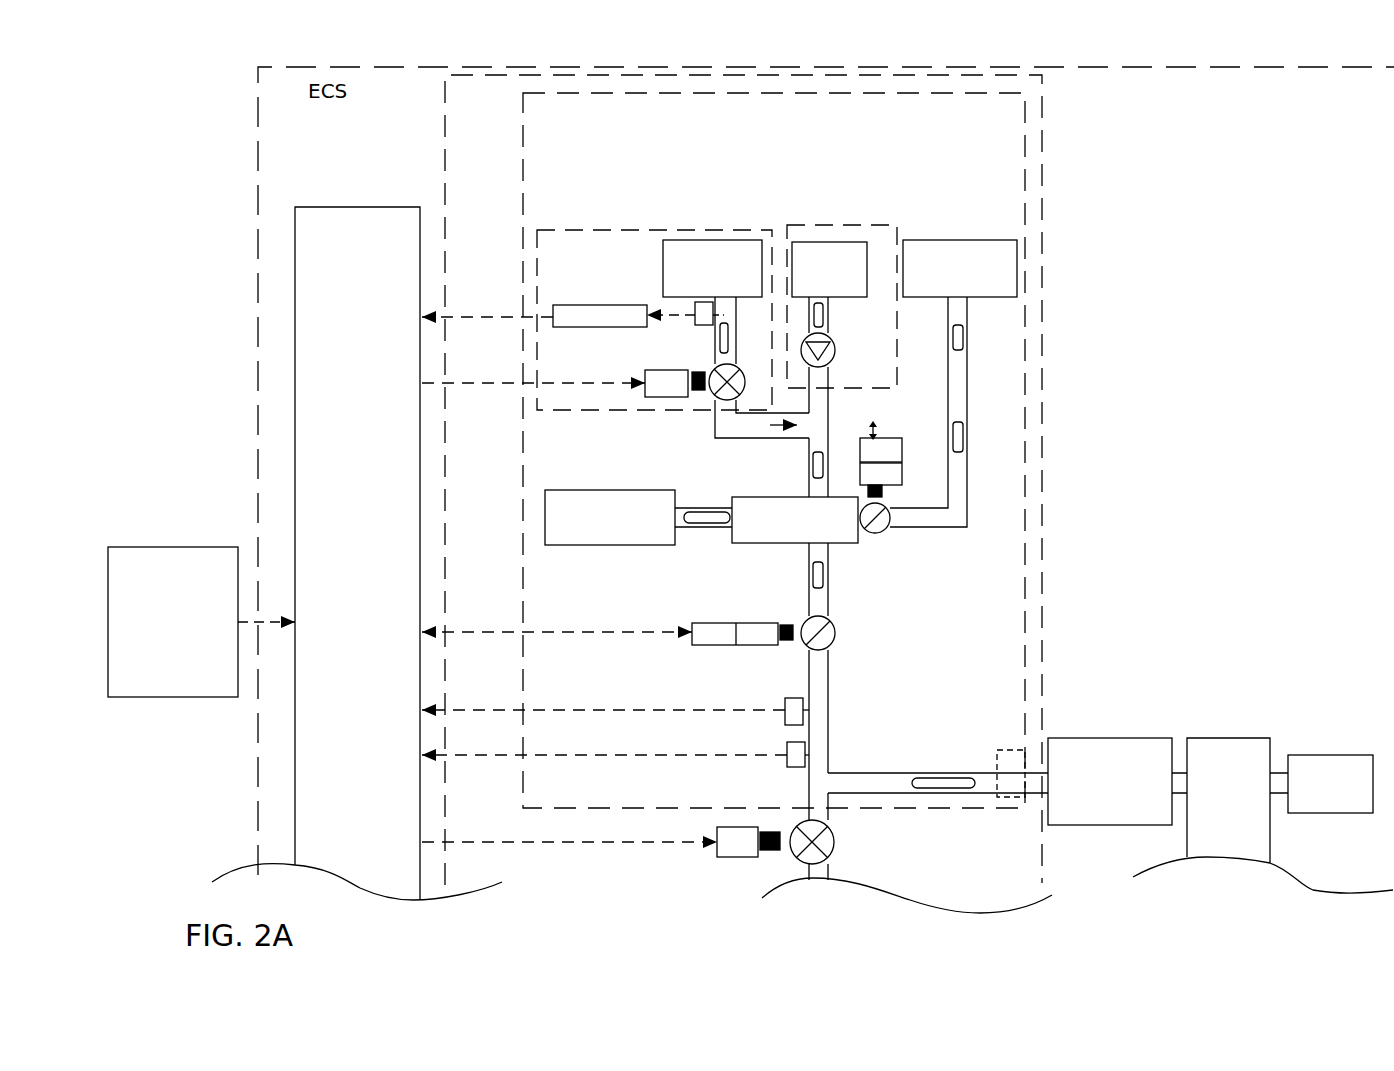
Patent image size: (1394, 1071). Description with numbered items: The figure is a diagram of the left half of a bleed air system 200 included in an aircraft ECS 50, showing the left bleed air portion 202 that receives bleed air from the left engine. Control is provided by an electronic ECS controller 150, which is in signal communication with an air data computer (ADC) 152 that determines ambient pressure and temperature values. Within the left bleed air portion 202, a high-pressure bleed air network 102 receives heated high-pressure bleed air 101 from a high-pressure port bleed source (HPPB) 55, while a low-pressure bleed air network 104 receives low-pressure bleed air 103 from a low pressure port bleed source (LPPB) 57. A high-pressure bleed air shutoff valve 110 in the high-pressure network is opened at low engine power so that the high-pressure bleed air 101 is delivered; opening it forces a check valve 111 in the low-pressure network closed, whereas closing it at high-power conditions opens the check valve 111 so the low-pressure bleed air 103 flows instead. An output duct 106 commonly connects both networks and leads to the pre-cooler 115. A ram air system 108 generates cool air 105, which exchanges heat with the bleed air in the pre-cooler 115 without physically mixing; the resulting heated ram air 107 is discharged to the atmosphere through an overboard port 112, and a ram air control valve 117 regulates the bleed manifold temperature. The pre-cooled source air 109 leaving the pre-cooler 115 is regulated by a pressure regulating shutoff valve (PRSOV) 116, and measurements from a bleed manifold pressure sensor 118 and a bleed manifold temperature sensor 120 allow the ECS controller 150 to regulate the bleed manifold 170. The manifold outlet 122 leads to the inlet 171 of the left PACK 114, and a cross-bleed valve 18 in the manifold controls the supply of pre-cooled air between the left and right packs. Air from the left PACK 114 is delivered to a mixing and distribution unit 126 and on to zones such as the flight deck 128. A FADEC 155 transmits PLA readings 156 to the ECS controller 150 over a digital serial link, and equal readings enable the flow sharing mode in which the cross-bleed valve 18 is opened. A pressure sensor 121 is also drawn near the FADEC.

The ECS 50 is at (348, 63).
The bleed air system 200 is at (443, 178).
The left bleed air portion 202 is at (521, 196).
The high-pressure bleed air network 102 is at (561, 227).
The high-pressure port bleed source (HPPB) 55 is at (711, 239).
The low-pressure bleed air network 104 is at (814, 224).
The low pressure port bleed source (LPPB) 57 is at (851, 239).
The ram air system 108 is at (960, 268).
The PLA readings 156 is at (488, 313).
The FADEC 155 is at (600, 303).
The pressure sensor 121 is at (691, 327).
The high-pressure bleed air shutoff valve 110 is at (714, 397).
The high-pressure bleed air 101 is at (719, 342).
The low-pressure bleed air 103 is at (825, 318).
The check valve 111 is at (837, 351).
The bleed manifold 170 is at (832, 668).
The cool air 105 is at (965, 343).
The output duct 106 is at (811, 468).
The overboard port 112 is at (612, 487).
The heated ram air 107 is at (695, 509).
The pre-cooler 115 is at (795, 520).
The ram air control valve 117 is at (885, 532).
The pre-cooled source air 109 is at (826, 574).
The pressure regulating shutoff valve (PRSOV) 116 is at (806, 624).
The bleed manifold pressure sensor 118 is at (784, 699).
The bleed manifold temperature sensor 120 is at (786, 769).
The outlet 122 is at (895, 771).
The inlet 171 is at (1004, 747).
The cross-bleed valve 18 is at (836, 842).
The left PACK 114 is at (1110, 781).
The mixing and distribution unit 126 is at (1208, 735).
The flight deck 128 is at (1320, 752).
The ECS controller 150 is at (357, 553).
The air data computer (ADC) 152 is at (201, 622).